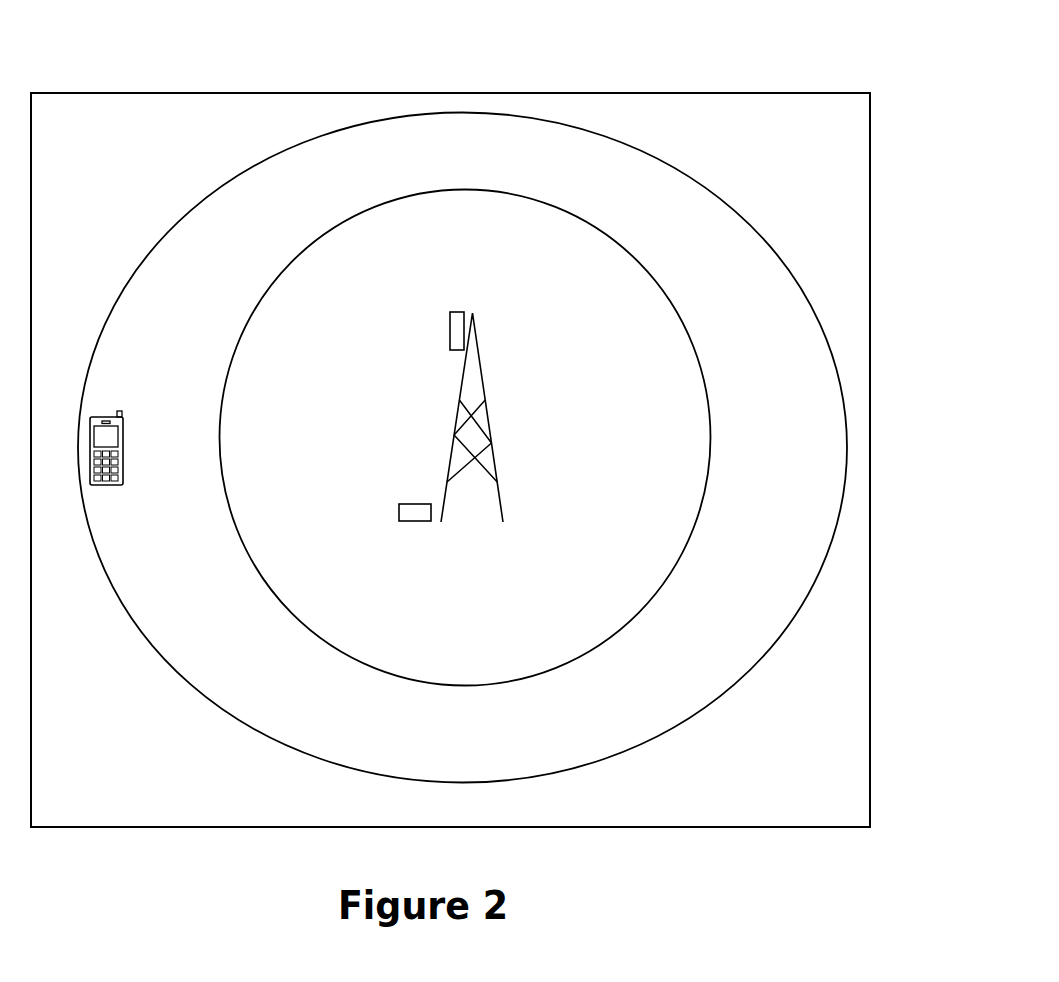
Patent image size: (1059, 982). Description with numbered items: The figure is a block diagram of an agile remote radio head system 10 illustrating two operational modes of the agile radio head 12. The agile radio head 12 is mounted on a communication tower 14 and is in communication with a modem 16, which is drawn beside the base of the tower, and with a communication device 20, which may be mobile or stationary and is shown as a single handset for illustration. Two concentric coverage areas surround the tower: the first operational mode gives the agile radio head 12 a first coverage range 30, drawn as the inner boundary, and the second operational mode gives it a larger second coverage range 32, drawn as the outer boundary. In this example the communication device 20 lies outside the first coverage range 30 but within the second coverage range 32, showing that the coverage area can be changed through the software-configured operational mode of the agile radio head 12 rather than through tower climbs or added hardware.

The agile remote radio head system 10 is at (824, 93).
The agile radio head 12 is at (450, 323).
The communication tower 14 is at (493, 455).
The modem 16 is at (412, 521).
The communication device 20 is at (123, 452).
The first coverage range 30 is at (458, 686).
The second coverage range 32 is at (668, 732).